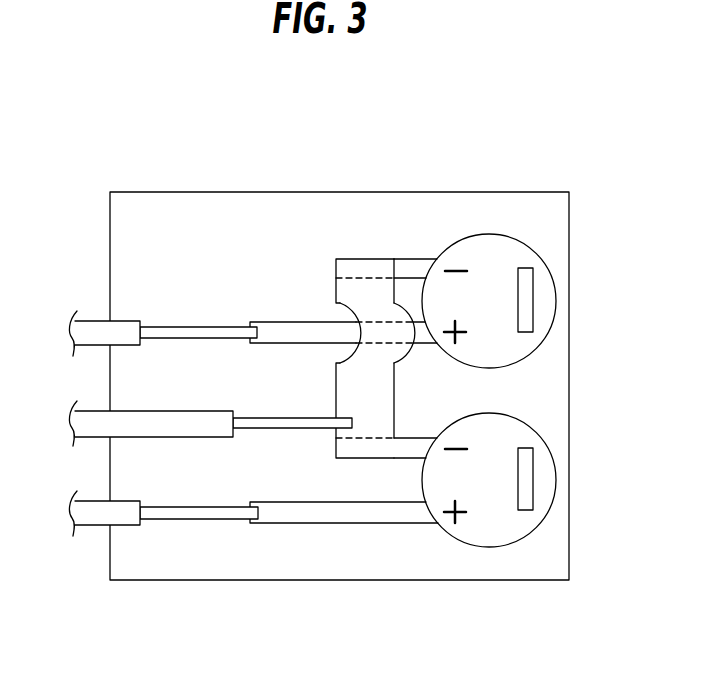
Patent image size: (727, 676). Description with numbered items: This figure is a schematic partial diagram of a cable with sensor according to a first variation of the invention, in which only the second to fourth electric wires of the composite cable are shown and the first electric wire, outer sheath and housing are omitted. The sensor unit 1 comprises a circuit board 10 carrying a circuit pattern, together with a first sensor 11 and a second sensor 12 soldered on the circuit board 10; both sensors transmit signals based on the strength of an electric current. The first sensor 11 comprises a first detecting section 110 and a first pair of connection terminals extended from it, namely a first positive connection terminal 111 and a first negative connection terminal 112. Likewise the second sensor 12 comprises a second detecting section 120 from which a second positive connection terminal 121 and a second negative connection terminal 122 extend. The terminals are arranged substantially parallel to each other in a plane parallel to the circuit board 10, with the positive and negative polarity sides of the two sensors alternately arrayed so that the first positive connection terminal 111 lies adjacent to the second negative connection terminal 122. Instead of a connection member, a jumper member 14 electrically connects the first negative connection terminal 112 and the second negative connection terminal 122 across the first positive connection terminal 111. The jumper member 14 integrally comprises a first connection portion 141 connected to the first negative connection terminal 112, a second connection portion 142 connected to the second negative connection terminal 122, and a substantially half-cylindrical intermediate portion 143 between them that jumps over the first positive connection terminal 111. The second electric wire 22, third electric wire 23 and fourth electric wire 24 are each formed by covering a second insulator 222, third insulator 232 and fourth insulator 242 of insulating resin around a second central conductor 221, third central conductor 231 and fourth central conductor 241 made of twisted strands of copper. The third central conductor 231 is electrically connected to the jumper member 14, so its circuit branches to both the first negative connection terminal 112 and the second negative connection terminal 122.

The sensor unit 1 is at (437, 123).
The circuit board 10 is at (467, 192).
The first sensor 11 is at (553, 228).
The first detecting section 110 is at (557, 300).
The second sensor 12 is at (554, 415).
The second detecting section 120 is at (555, 483).
The jumper member 14 is at (385, 349).
The first connection portion 141 is at (353, 267).
The second connection portion 142 is at (355, 450).
The intermediate portion 143 is at (410, 353).
The first positive connection terminal 111 is at (290, 322).
The first negative connection terminal 112 is at (420, 259).
The second positive connection terminal 121 is at (290, 501).
The second negative connection terminal 122 is at (415, 438).
The second electric wire 22 is at (163, 298).
The second central conductor 221 is at (212, 327).
The second insulator 222 is at (114, 315).
The third electric wire 23 is at (210, 393).
The third central conductor 231 is at (258, 418).
The third insulator 232 is at (151, 411).
The fourth electric wire 24 is at (158, 574).
The fourth central conductor 241 is at (163, 512).
The fourth insulator 242 is at (98, 517).